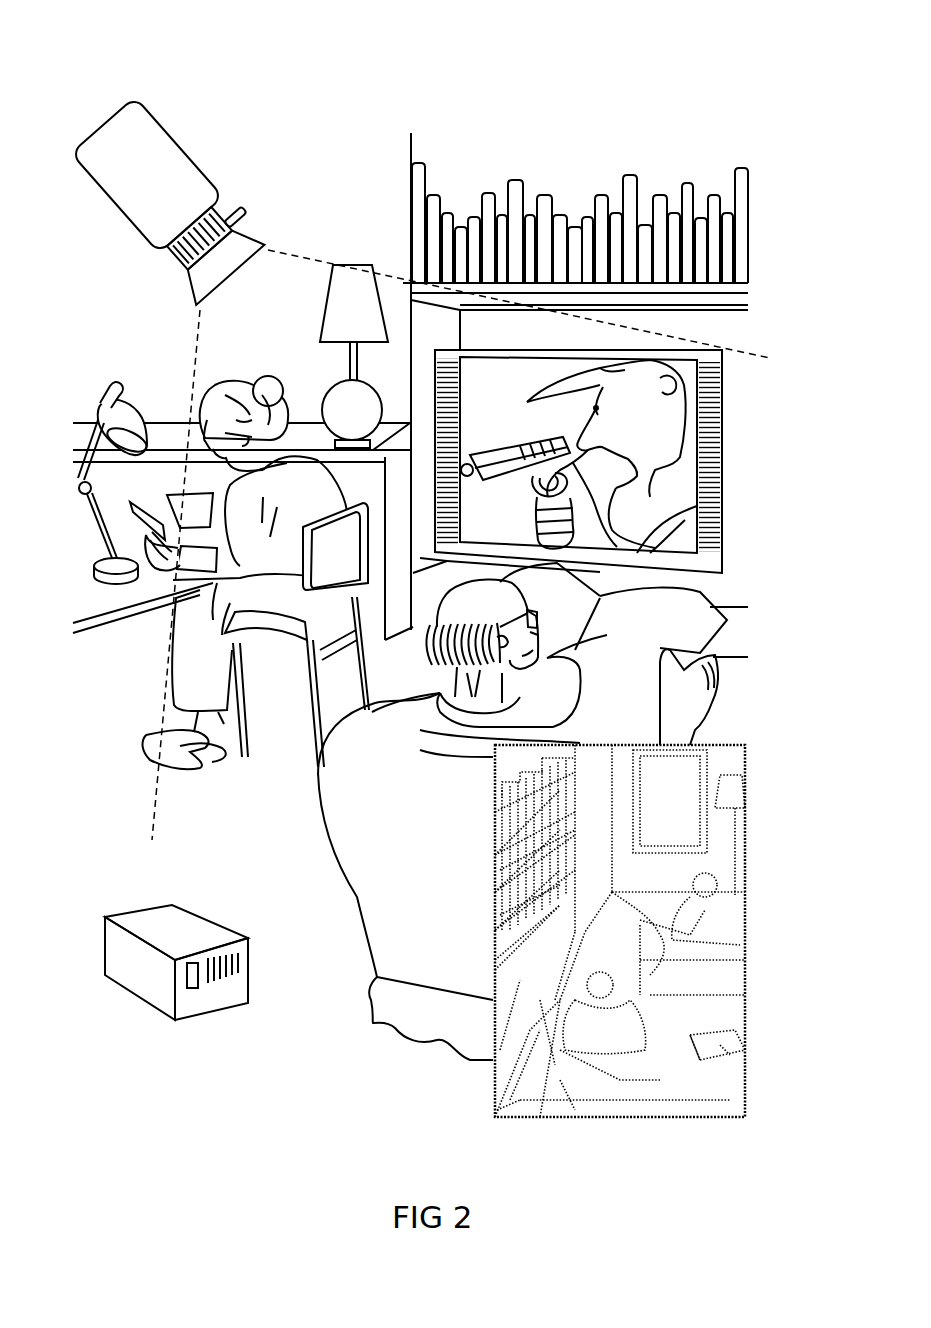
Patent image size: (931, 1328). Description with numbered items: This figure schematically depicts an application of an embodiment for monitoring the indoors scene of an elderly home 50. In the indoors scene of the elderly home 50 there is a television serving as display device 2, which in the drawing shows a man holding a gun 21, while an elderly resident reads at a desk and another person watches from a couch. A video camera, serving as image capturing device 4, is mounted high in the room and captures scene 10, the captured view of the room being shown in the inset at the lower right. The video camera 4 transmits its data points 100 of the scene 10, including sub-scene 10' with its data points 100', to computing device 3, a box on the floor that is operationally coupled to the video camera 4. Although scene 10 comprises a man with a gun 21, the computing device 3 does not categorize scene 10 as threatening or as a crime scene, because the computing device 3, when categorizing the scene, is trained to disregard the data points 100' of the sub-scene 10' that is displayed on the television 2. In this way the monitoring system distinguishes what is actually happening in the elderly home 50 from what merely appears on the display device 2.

The display device 2 is at (723, 468).
The computing device 3 is at (173, 902).
The image capturing device 4 is at (135, 97).
The scene 10 is at (651, 903).
The sub-scene 10' is at (509, 851).
The gun 21 is at (483, 452).
The elderly home 50 is at (295, 127).
The data points 100 is at (467, 1099).
The data points 100' is at (490, 904).